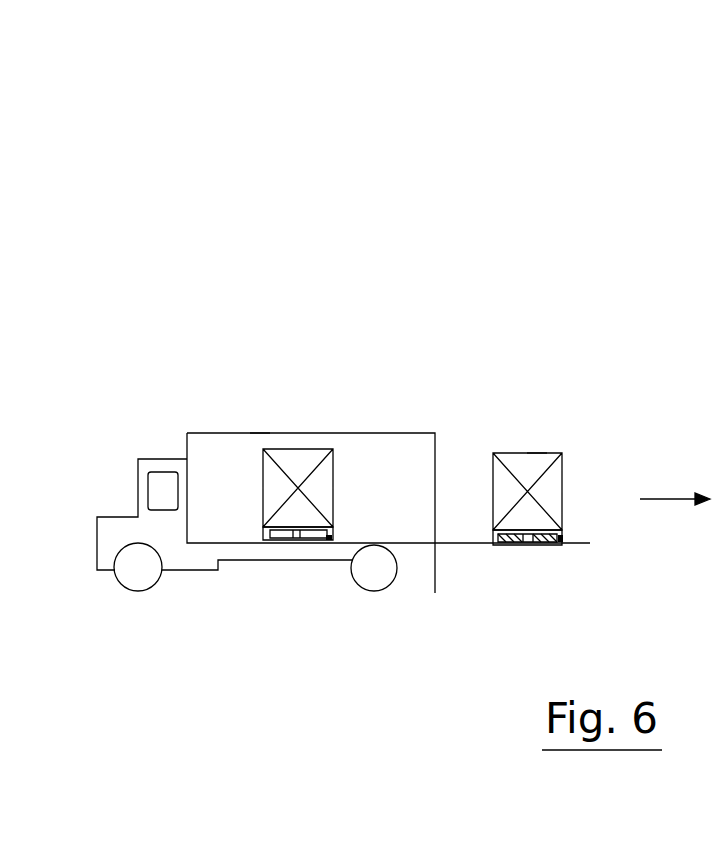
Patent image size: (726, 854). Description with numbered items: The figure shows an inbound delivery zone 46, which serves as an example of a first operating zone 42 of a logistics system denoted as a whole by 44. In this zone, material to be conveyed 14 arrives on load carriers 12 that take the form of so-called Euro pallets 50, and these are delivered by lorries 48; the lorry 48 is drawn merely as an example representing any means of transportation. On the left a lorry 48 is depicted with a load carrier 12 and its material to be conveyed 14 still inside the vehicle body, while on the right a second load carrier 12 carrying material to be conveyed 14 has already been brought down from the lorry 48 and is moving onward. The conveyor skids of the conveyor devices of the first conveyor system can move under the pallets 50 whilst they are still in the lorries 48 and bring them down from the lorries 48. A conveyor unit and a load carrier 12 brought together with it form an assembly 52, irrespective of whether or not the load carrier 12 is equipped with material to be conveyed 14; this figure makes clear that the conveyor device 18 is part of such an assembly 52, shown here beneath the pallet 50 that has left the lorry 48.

The load carrier 12 is at (275, 546).
The material to be conveyed 14 is at (324, 500).
The conveyor device 18 is at (539, 549).
The first operating zone 42 is at (414, 176).
The logistics system 44 is at (365, 142).
The inbound delivery zone 46 is at (485, 211).
The lorry 48 is at (260, 420).
The Euro pallet 50 is at (328, 548).
The assembly 52 is at (537, 441).